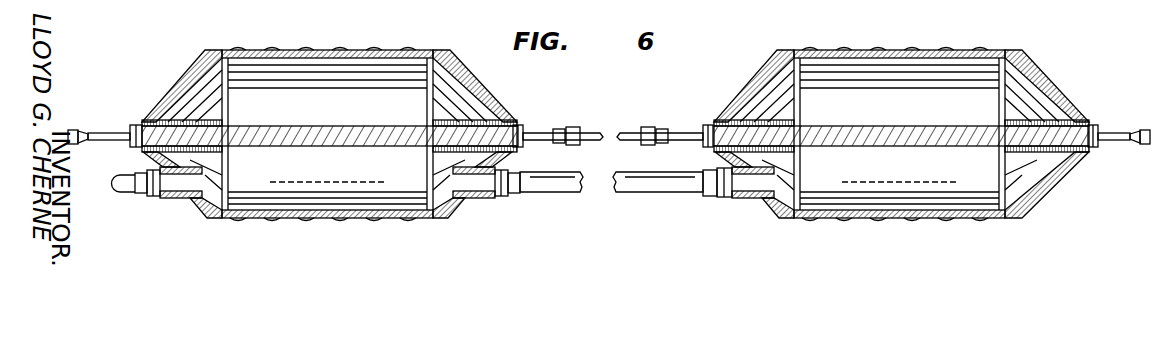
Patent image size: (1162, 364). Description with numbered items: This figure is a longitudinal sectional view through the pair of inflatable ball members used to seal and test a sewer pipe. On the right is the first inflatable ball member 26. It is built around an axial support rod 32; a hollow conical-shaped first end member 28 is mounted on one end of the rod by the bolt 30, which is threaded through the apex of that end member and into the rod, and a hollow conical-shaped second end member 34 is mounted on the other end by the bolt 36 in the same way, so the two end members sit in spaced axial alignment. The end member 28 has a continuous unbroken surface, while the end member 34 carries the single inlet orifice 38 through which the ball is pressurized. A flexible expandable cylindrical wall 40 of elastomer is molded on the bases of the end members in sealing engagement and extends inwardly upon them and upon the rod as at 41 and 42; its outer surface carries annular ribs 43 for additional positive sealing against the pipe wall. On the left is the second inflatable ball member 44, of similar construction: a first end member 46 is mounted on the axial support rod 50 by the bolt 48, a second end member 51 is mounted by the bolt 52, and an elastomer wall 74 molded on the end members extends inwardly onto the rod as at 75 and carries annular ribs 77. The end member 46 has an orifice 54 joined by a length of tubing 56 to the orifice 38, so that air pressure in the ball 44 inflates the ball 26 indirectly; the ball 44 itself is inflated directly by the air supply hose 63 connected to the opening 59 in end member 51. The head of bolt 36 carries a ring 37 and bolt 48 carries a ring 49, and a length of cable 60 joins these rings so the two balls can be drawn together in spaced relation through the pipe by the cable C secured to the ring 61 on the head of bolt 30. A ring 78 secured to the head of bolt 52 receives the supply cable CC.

The first inflatable ball member 26 is at (883, 138).
The first end member 28 is at (1065, 86).
The bolt 30 is at (1110, 117).
The axial support rod 32 is at (901, 119).
The second end member 34 is at (749, 86).
The bolt 36 is at (701, 115).
The ring 37 is at (660, 108).
The inlet orifice 38 is at (778, 185).
The flexible expandable cylindrical wall 40 is at (899, 112).
The inward extension of wall 41 is at (899, 130).
The inward extension of wall 42 is at (1028, 185).
The annular ribs 43 is at (895, 139).
The second inflatable ball member 44 is at (305, 138).
The first end member 46 is at (482, 103).
The bolt 48 is at (518, 128).
The ring 49 is at (545, 130).
The axial support rod 50 is at (306, 133).
The second end member 51 is at (180, 90).
The bolt 52 is at (138, 126).
The orifice 54 is at (464, 186).
The length of tubing 56 is at (610, 193).
The opening 59 is at (188, 183).
The length of cable 60 is at (624, 131).
The ring 61 is at (1111, 159).
The air supply hose 63 is at (125, 193).
The flexible expandable cylindrical wall 74 is at (334, 52).
The inward extension of wall 75 is at (330, 107).
The annular ribs 77 is at (322, 52).
The ring 78 is at (113, 143).
The cable C is at (1138, 158).
The supply cable CC is at (88, 131).